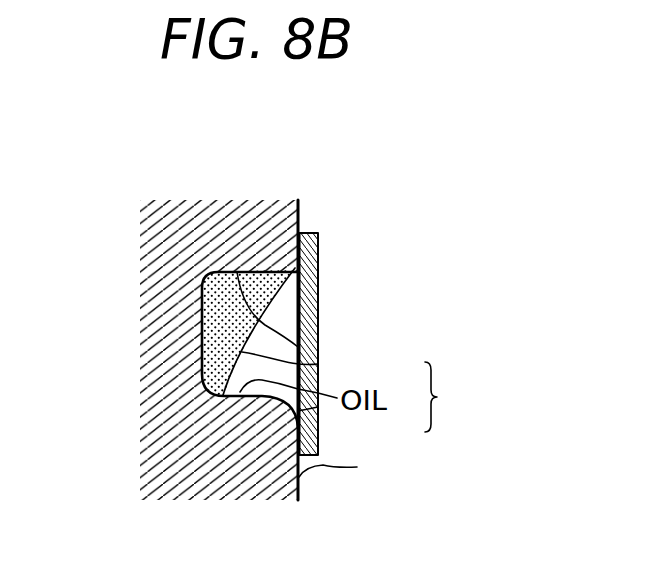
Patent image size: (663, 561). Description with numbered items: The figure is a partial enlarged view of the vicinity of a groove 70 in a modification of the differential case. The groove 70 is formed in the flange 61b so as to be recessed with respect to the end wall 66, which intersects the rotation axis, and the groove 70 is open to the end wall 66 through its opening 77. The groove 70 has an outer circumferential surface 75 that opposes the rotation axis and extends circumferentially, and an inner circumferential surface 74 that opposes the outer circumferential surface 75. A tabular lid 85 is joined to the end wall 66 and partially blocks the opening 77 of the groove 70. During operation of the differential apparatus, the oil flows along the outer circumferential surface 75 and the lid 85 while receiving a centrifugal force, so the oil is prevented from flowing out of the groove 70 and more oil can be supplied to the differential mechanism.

The flange 61b is at (157, 327).
The lid 85 is at (320, 278).
The opening 77 is at (300, 344).
The outer circumferential surface 75 is at (318, 364).
The inner circumferential surface 74 is at (318, 407).
The groove 70 is at (447, 397).
The end wall 66 is at (357, 467).